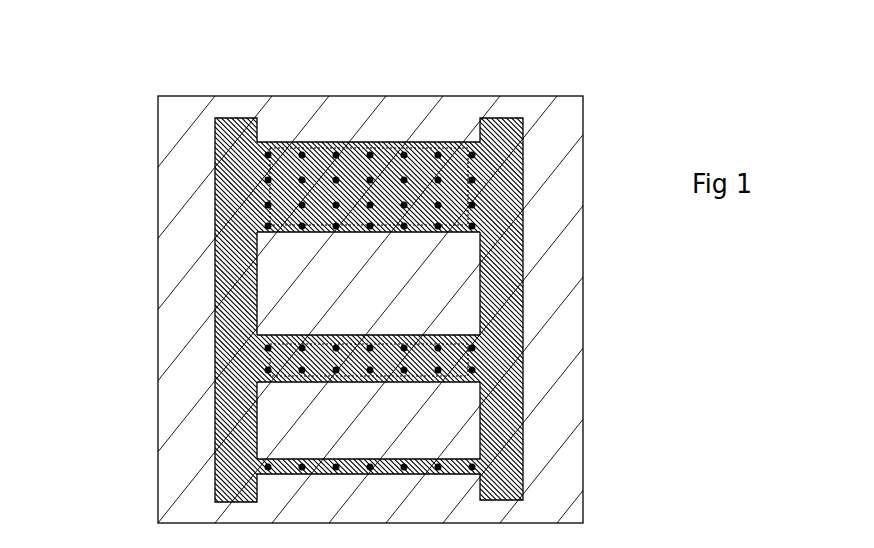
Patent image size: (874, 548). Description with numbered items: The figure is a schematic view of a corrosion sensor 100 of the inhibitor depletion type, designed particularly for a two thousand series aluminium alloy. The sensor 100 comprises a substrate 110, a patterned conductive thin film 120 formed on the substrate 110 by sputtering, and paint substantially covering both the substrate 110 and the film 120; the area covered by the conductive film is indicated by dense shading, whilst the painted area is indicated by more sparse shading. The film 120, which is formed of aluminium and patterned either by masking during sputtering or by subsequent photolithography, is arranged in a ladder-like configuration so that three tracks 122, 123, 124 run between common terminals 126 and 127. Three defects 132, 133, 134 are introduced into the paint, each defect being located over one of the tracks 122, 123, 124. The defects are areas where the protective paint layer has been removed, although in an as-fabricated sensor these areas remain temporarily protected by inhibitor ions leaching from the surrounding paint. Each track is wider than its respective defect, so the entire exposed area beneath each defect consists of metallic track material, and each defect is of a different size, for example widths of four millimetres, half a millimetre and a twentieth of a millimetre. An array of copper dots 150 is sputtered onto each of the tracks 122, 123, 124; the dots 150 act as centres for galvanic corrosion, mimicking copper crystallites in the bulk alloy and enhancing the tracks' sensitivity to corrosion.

The corrosion sensor 100 is at (553, 70).
The substrate 110 is at (555, 145).
The patterned conductive thin film 120 is at (187, 297).
The track 122 is at (478, 468).
The track 123 is at (492, 357).
The track 124 is at (487, 190).
The common terminal 126 is at (247, 150).
The common terminal 127 is at (507, 152).
The defect 132 is at (267, 467).
The defect 133 is at (267, 364).
The defect 134 is at (270, 185).
The copper dots 150 is at (370, 150).